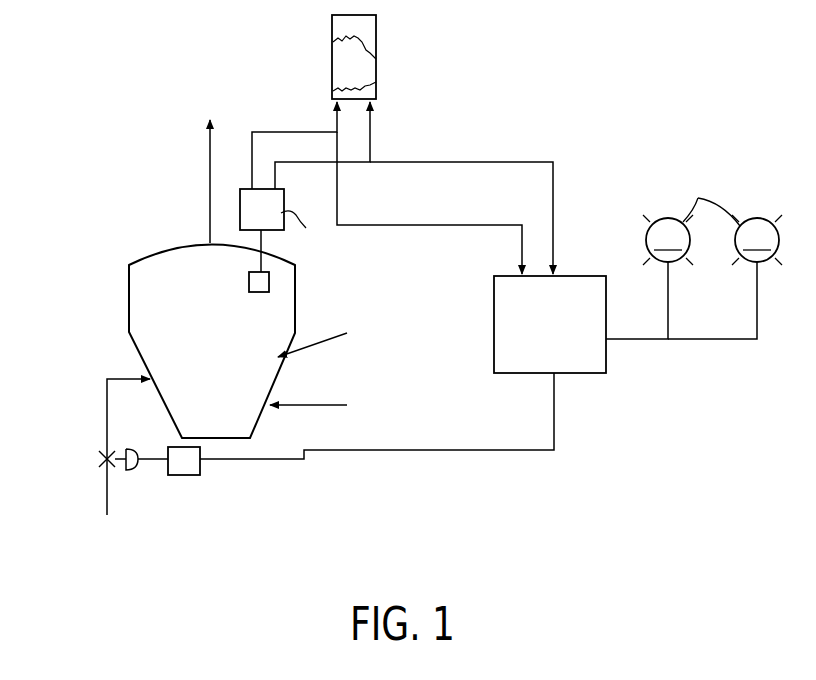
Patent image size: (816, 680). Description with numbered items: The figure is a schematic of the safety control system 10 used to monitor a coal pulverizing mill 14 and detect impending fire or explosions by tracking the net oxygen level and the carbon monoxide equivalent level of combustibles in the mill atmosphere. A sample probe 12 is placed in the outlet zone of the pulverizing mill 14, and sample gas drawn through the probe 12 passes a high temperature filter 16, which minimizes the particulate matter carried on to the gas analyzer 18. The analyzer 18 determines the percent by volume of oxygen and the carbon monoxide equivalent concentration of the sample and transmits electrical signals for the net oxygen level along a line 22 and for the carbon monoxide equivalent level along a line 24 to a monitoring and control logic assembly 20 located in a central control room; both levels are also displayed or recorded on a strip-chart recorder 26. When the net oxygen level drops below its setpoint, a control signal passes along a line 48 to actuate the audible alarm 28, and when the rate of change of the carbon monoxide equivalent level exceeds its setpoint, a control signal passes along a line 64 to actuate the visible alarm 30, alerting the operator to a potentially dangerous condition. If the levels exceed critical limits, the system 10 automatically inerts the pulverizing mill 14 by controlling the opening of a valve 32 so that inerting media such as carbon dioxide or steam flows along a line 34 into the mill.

The safety control system 10 is at (545, 112).
The CO_e/O_2 sample probe 12 is at (261, 259).
The coal pulverizing mill 14 is at (130, 305).
The high temperature filter 16 is at (269, 282).
The oxygen and CO_e gas analyzer 18 is at (286, 196).
The monitoring and control logic assembly 20 is at (606, 367).
The line 22 is at (309, 129).
The line 24 is at (315, 157).
The strip-chart recorder 26 is at (378, 22).
The audible alarm 28 is at (690, 221).
The visible alarm 30 is at (740, 231).
The valve 32 is at (118, 467).
The line 34 is at (107, 420).
The line 48 is at (668, 288).
The line 64 is at (757, 305).